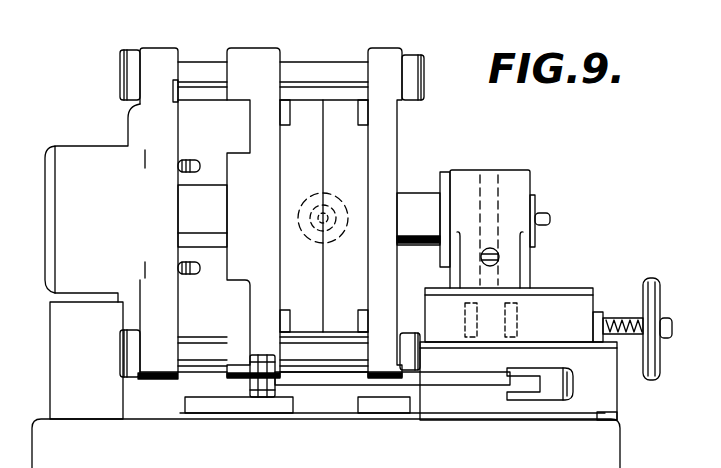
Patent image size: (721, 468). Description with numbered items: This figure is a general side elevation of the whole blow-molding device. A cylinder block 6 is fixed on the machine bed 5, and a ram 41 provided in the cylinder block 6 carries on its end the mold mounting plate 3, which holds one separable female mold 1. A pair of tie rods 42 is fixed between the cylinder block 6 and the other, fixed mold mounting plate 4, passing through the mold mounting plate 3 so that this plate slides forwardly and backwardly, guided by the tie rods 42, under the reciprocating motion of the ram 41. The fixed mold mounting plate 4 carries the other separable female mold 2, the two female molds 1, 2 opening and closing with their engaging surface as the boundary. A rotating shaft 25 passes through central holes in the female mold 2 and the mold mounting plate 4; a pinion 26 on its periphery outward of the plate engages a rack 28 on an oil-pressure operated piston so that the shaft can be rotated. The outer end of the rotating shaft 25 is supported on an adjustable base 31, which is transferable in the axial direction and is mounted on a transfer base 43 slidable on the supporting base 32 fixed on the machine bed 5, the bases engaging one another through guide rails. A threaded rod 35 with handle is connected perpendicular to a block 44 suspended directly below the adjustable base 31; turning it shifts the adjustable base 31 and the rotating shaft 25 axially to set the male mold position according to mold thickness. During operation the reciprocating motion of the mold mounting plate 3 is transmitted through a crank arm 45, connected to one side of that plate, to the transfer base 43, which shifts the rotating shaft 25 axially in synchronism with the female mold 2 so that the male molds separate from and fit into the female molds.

The separable female mold 1 is at (302, 112).
The separable female mold 2 is at (345, 115).
The mold mounting plate 3 is at (267, 60).
The mold mounting plate 4 is at (385, 65).
The machine bed 5 is at (38, 437).
The cylinder block 6 is at (73, 157).
The rotating shaft 25 is at (418, 197).
The pinion 26 is at (493, 185).
The rack 28 is at (500, 256).
The adjustable base 31 is at (520, 187).
The supporting base 32 is at (603, 400).
The threaded rod with handle 35 is at (612, 317).
The ram 41 is at (208, 193).
The tie rods 42 is at (198, 68).
The transfer base 43 is at (565, 298).
The block 44 is at (492, 290).
The crank arm 45 is at (452, 378).